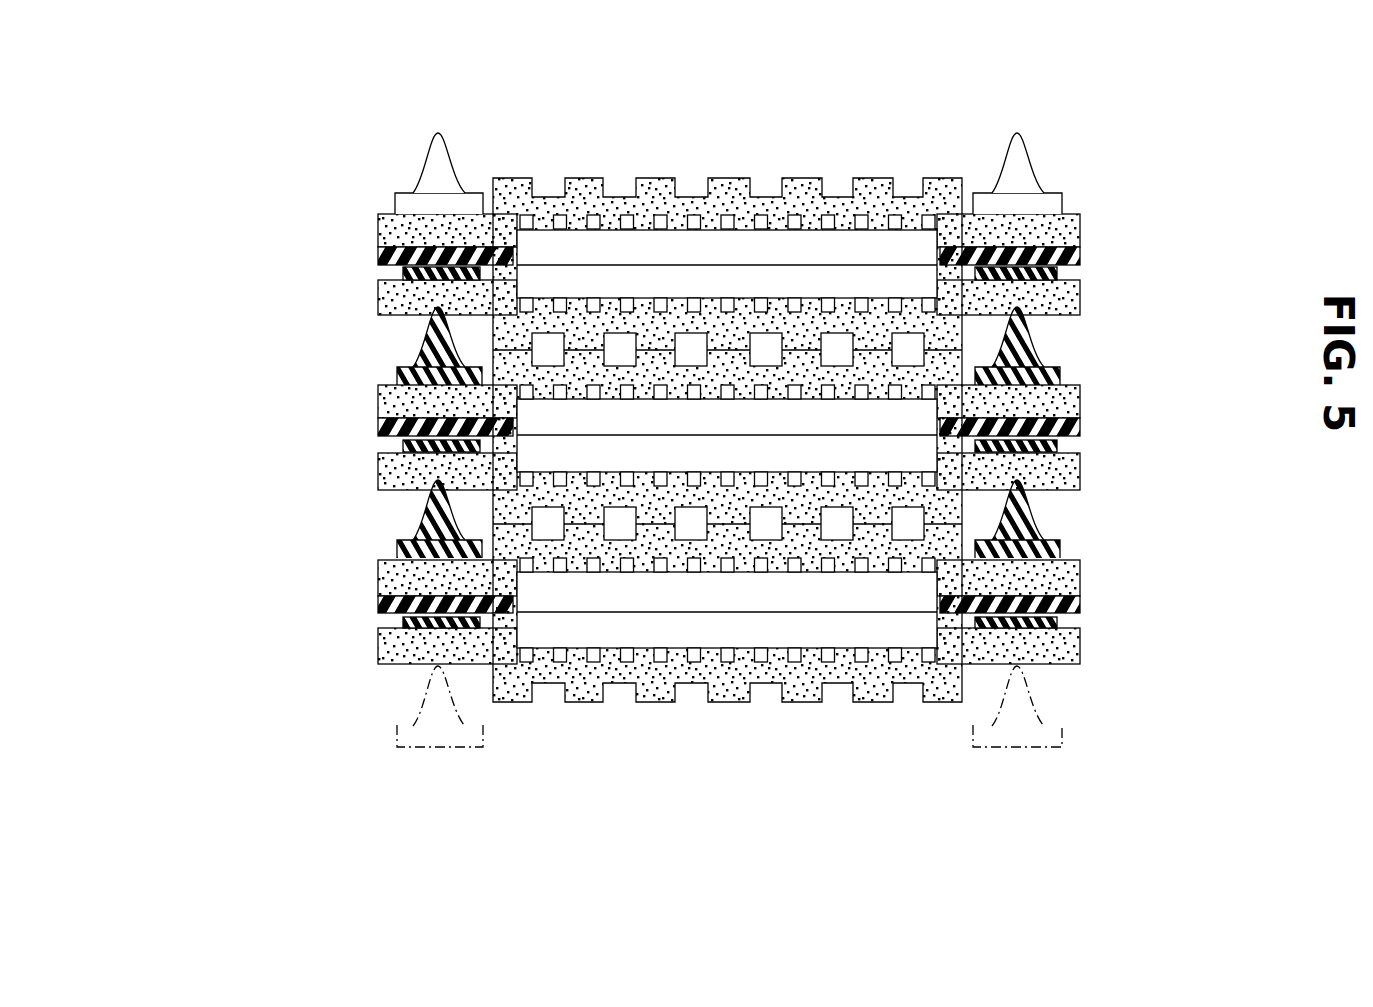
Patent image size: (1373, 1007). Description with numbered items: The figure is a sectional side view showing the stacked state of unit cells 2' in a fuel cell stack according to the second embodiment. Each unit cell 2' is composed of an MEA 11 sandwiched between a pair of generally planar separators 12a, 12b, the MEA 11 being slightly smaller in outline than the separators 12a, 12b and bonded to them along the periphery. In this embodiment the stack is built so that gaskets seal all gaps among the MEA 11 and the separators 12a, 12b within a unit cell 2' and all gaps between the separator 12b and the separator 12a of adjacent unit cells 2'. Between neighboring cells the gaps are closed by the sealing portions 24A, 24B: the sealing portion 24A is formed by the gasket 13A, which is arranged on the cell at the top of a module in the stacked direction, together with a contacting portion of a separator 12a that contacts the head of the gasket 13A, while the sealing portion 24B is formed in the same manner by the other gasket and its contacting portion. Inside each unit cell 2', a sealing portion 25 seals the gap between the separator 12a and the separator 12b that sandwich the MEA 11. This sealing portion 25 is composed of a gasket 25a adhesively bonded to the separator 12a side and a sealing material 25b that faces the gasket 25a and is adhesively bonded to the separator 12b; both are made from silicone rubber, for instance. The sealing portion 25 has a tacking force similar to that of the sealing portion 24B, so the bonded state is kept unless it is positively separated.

The MEA 11 is at (648, 265).
The separator 12a is at (1080, 313).
The separator 12b is at (1080, 220).
The gasket 13A is at (414, 167).
The unit cell 2' is at (1039, 443).
The sealing portion 24A is at (407, 692).
The sealing portion 24B is at (392, 353).
The sealing portion 25 is at (255, 207).
The gasket 25a is at (407, 268).
The sealing material 25b is at (380, 257).